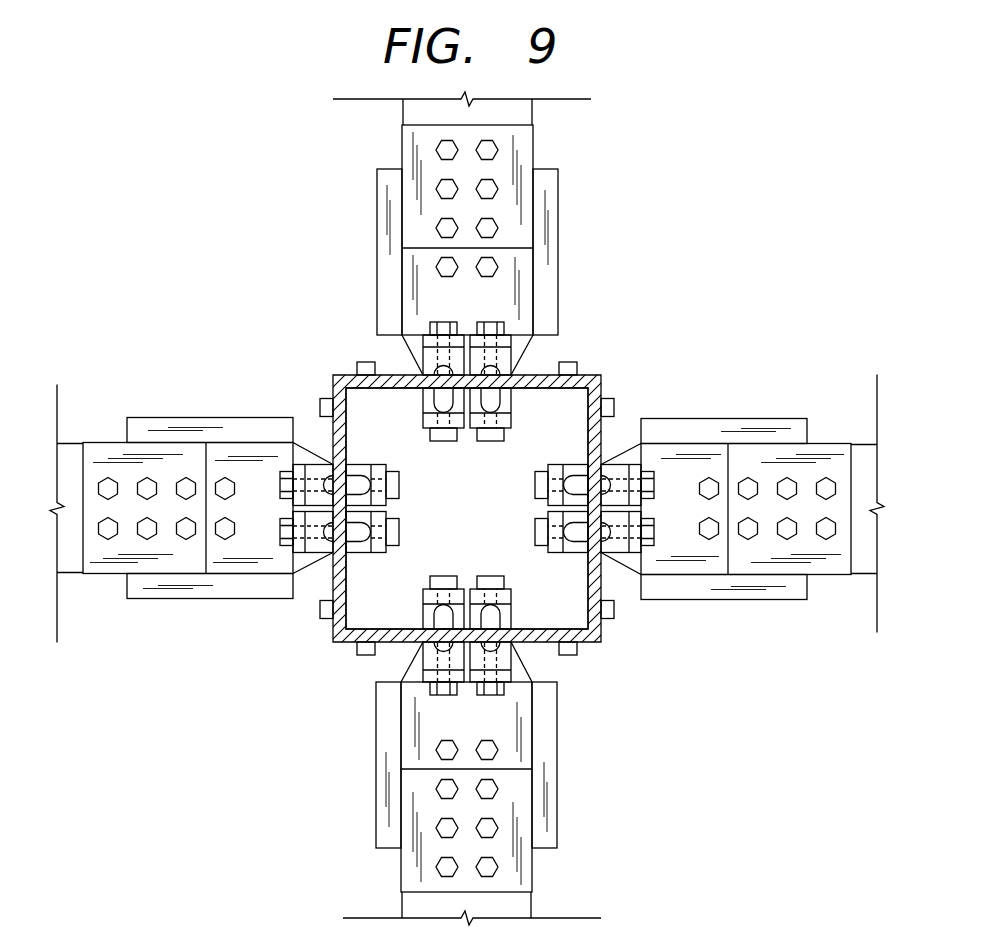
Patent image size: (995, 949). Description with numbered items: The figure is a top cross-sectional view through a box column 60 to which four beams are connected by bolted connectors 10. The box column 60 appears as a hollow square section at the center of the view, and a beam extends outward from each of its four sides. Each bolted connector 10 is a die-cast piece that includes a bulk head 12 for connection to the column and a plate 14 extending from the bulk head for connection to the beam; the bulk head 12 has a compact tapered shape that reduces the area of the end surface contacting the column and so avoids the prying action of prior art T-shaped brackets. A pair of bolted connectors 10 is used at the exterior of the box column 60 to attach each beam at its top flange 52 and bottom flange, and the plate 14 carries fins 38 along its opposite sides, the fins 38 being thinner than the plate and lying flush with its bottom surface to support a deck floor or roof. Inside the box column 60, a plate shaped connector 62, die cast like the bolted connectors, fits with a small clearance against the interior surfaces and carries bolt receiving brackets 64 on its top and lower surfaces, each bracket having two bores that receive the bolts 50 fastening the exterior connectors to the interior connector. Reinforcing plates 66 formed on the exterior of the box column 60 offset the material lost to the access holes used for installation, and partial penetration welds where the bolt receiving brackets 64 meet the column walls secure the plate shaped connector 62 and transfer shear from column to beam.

The bolted connector 10 is at (467, 508).
The bulk head 12 is at (618, 553).
The plate 14 is at (817, 548).
The fins 38 is at (738, 420).
The bolts 50 is at (491, 321).
The top flange 52 is at (67, 453).
The box column 60 is at (495, 495).
The plate shaped connector 62 is at (555, 412).
The bolt receiving brackets 64 is at (363, 472).
The reinforcing plates 66 is at (607, 395).